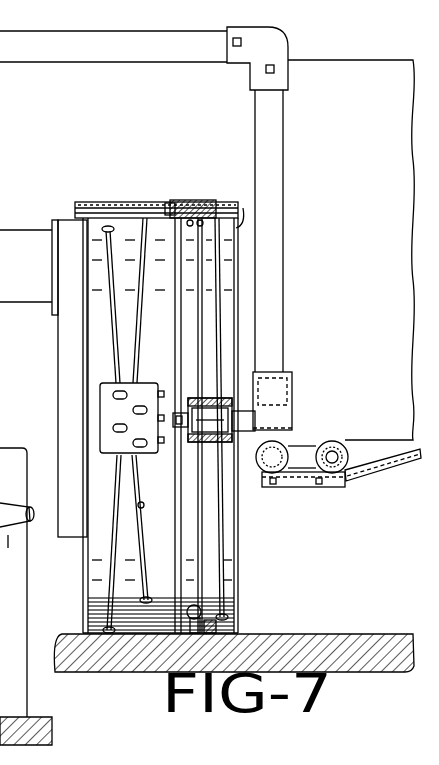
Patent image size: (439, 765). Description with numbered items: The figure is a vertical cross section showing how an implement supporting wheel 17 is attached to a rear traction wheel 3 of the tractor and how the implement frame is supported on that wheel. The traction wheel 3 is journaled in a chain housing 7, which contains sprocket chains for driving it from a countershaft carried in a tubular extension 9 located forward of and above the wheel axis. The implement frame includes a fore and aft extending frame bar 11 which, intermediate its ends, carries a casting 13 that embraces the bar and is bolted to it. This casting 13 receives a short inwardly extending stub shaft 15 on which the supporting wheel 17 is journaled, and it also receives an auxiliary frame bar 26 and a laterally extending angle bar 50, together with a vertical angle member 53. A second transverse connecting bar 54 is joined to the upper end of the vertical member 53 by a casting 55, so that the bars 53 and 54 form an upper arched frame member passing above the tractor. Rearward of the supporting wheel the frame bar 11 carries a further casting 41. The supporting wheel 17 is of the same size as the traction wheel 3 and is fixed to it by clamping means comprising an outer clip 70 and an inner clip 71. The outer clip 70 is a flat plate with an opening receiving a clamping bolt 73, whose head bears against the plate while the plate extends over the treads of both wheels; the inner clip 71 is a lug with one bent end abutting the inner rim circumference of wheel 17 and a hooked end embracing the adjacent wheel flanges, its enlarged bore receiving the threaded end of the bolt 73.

The second transverse connecting bar 54 is at (89, 38).
The casting 55 is at (265, 42).
The vertical angle member 53 is at (283, 172).
The casting 41 is at (292, 392).
The frame bar 11 is at (286, 448).
The auxiliary frame bar 26 is at (334, 470).
The casting 13 is at (300, 487).
The angle bar 50 is at (378, 470).
The stub shaft 15 is at (248, 430).
The tubular extension 9 is at (15, 240).
The chain housing 7 is at (68, 412).
The rear traction wheel 3 is at (120, 203).
The implement supporting wheel 17 is at (224, 205).
The clamping bolt 73 is at (190, 204).
The outer clip 70 is at (173, 205).
The inner clip 71 is at (243, 210).